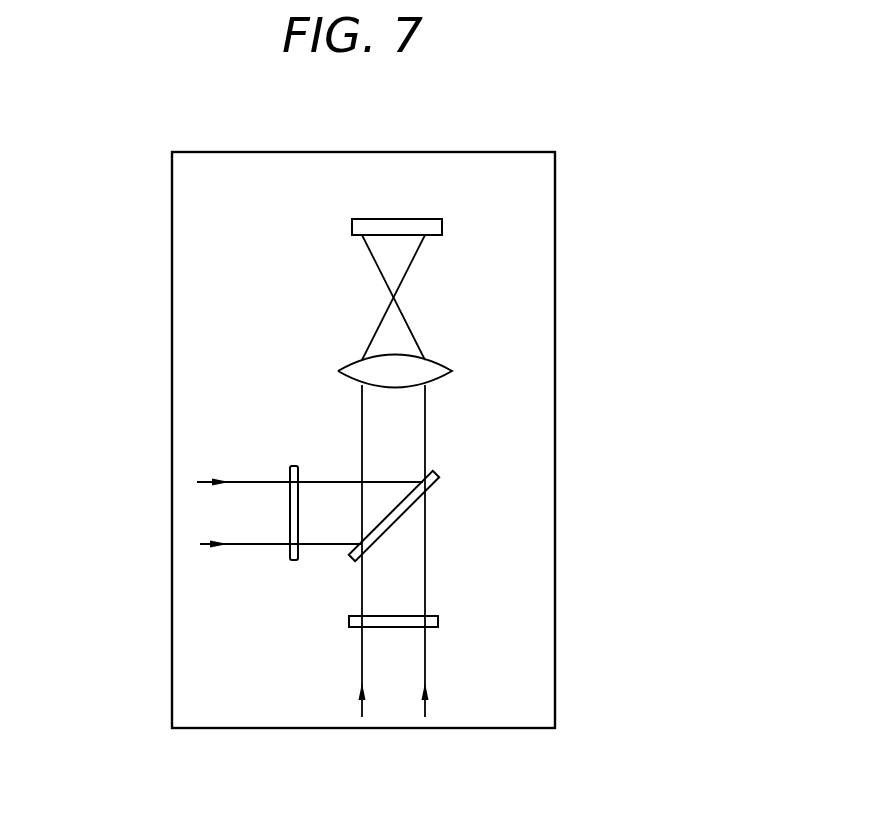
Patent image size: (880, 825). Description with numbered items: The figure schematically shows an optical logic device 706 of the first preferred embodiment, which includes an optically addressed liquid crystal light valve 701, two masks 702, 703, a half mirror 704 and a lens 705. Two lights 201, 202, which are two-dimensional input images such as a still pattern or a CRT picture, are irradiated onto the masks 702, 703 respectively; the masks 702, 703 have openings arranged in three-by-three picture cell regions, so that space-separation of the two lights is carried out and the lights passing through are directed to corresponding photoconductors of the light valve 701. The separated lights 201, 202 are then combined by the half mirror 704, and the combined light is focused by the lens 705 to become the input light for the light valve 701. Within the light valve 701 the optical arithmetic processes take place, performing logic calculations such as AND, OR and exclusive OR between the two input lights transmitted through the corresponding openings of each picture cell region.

The optically addressed liquid crystal light valve 701 is at (442, 227).
The mask 702 is at (294, 560).
The mask 703 is at (438, 622).
The half mirror 704 is at (439, 474).
The lens 705 is at (452, 369).
The optical logic device 706 is at (555, 552).
The light 201 is at (238, 522).
The light 202 is at (402, 670).